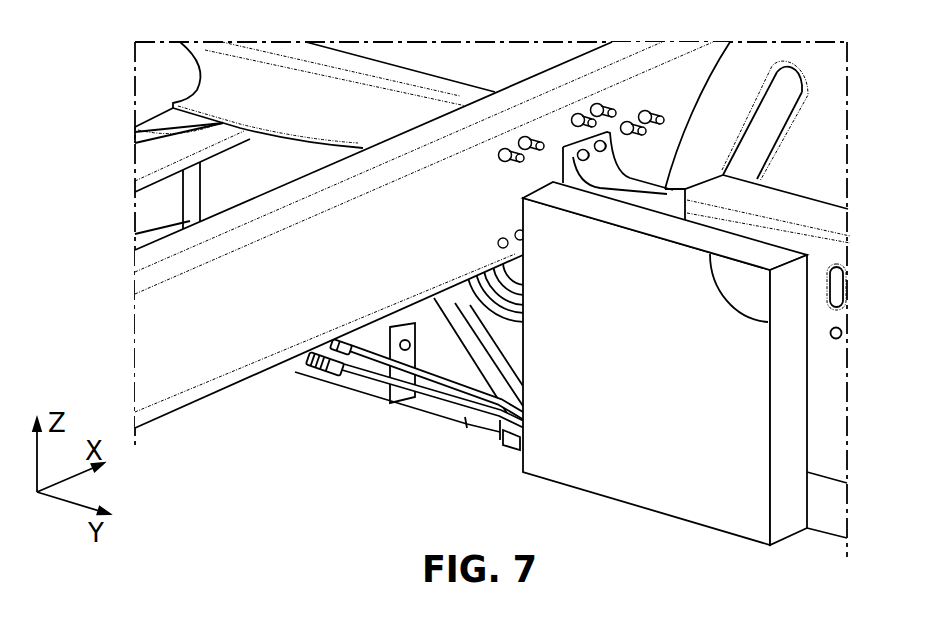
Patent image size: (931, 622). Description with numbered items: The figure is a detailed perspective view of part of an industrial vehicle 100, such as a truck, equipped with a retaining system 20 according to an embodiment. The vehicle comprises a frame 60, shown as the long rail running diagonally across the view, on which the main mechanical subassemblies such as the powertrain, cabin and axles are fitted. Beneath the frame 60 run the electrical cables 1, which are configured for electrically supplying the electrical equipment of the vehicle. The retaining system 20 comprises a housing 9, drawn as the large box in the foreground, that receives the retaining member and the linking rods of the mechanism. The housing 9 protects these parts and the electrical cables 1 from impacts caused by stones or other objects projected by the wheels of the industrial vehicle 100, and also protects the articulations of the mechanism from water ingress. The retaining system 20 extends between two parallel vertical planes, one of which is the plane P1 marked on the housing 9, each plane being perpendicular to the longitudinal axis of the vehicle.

The industrial vehicle 100 is at (110, 125).
The frame 60 is at (218, 348).
The electrical cables 1 is at (412, 390).
The retaining system 20 is at (494, 451).
The housing 9 is at (665, 383).
The vertical plane P1 is at (739, 288).